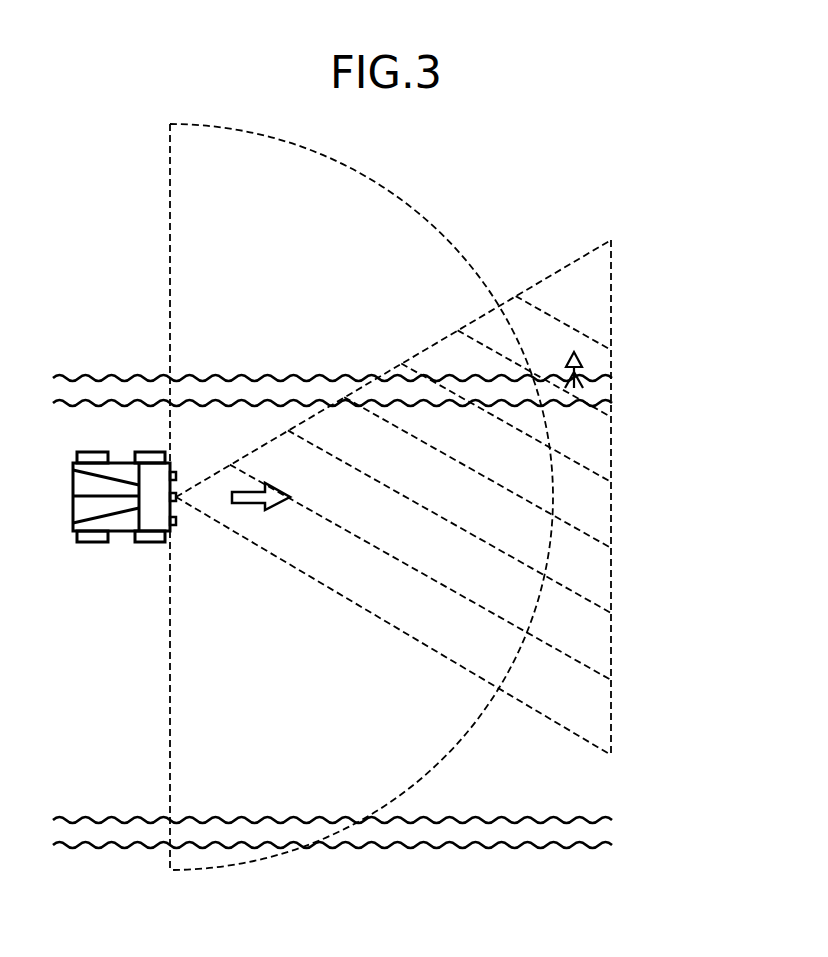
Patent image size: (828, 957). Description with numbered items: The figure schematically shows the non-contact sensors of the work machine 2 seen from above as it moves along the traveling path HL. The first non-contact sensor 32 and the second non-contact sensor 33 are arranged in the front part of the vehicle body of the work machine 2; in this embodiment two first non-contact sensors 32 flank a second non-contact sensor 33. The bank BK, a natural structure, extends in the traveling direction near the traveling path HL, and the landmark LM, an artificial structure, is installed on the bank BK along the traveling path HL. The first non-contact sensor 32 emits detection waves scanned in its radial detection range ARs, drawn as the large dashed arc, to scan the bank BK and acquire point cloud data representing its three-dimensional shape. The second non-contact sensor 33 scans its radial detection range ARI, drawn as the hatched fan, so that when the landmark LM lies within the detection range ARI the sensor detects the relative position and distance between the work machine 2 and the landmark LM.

The work machine 2 is at (125, 462).
The first non-contact sensor 32 is at (176, 475).
The second non-contact sensor 33 is at (177, 500).
The detection range ARs is at (428, 212).
The detection range ARI is at (611, 570).
The bank BK is at (312, 393).
The landmark LM is at (578, 355).
The traveling path HL is at (580, 803).